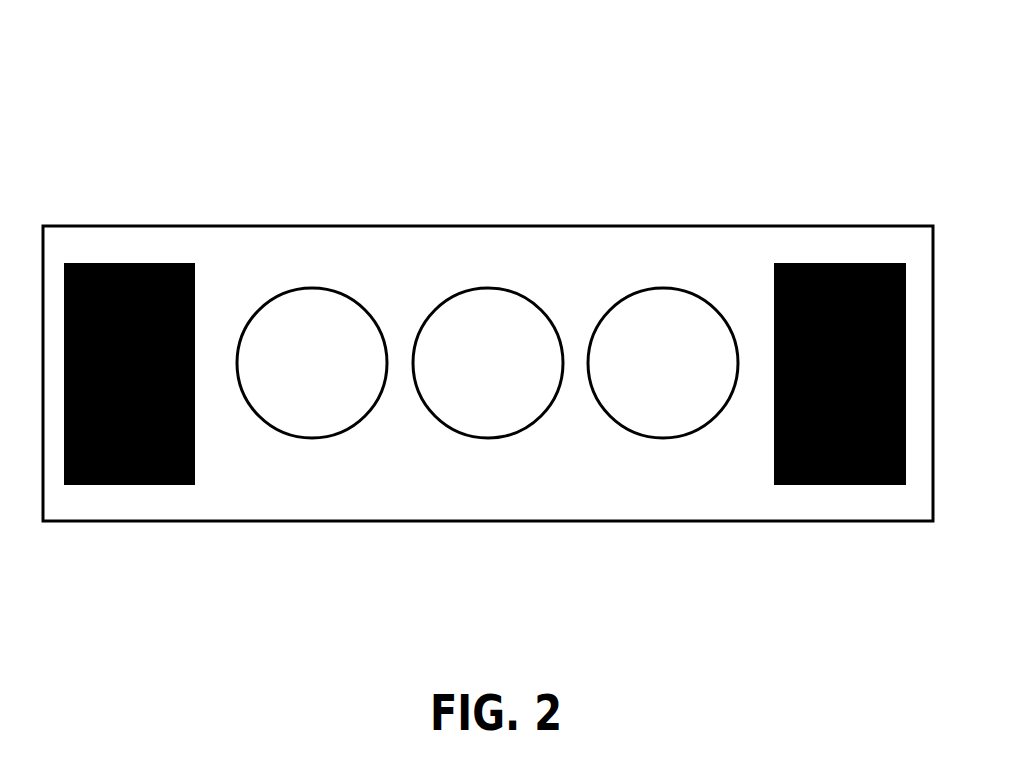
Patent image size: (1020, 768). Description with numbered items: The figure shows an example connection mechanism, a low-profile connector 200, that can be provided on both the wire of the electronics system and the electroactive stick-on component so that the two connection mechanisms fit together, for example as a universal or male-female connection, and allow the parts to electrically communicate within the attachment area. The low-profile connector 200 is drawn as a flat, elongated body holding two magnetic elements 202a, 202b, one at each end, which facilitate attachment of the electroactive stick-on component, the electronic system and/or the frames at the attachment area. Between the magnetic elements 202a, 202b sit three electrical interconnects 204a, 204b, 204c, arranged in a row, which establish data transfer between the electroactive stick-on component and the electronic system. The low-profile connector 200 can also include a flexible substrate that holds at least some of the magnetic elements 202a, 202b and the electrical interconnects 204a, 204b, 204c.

The low-profile connector 200 is at (168, 58).
The magnetic element 202a is at (129, 390).
The magnetic element 202b is at (840, 390).
The electrical interconnect 204a is at (312, 363).
The electrical interconnect 204b is at (488, 363).
The electrical interconnect 204c is at (663, 363).